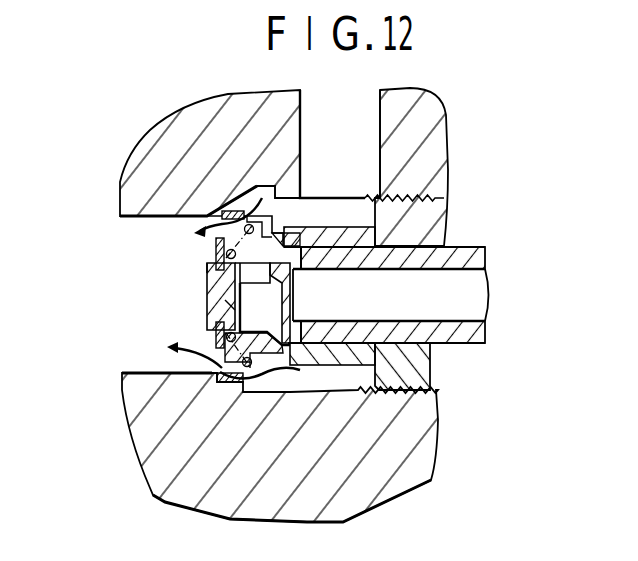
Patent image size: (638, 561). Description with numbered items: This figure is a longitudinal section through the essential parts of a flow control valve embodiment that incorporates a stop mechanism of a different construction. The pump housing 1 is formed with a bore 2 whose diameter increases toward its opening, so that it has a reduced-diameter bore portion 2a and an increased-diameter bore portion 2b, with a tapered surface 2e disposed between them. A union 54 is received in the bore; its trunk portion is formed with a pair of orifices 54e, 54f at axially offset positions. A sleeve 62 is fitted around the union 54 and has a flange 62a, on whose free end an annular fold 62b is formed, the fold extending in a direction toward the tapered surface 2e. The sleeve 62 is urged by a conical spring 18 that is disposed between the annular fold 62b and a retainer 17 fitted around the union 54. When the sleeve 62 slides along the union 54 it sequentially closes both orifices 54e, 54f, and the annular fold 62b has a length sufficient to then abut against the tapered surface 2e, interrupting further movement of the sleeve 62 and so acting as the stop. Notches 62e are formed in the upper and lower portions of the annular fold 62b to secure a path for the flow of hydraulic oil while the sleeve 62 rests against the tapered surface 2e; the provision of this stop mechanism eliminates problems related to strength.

The pump housing 1 is at (145, 215).
The bore 2 is at (330, 388).
The reduced-diameter bore portion 2a is at (141, 372).
The increased-diameter bore portion 2b is at (366, 392).
The tapered surface 2e is at (240, 396).
The retainer 17 is at (213, 341).
The conical spring 18 is at (215, 378).
The union 54 is at (458, 256).
The orifice 54e is at (310, 244).
The orifice 54f is at (300, 345).
The sleeve 62 is at (362, 237).
The flange 62a is at (284, 190).
The annular fold 62b is at (262, 199).
The notch 62e is at (220, 207).